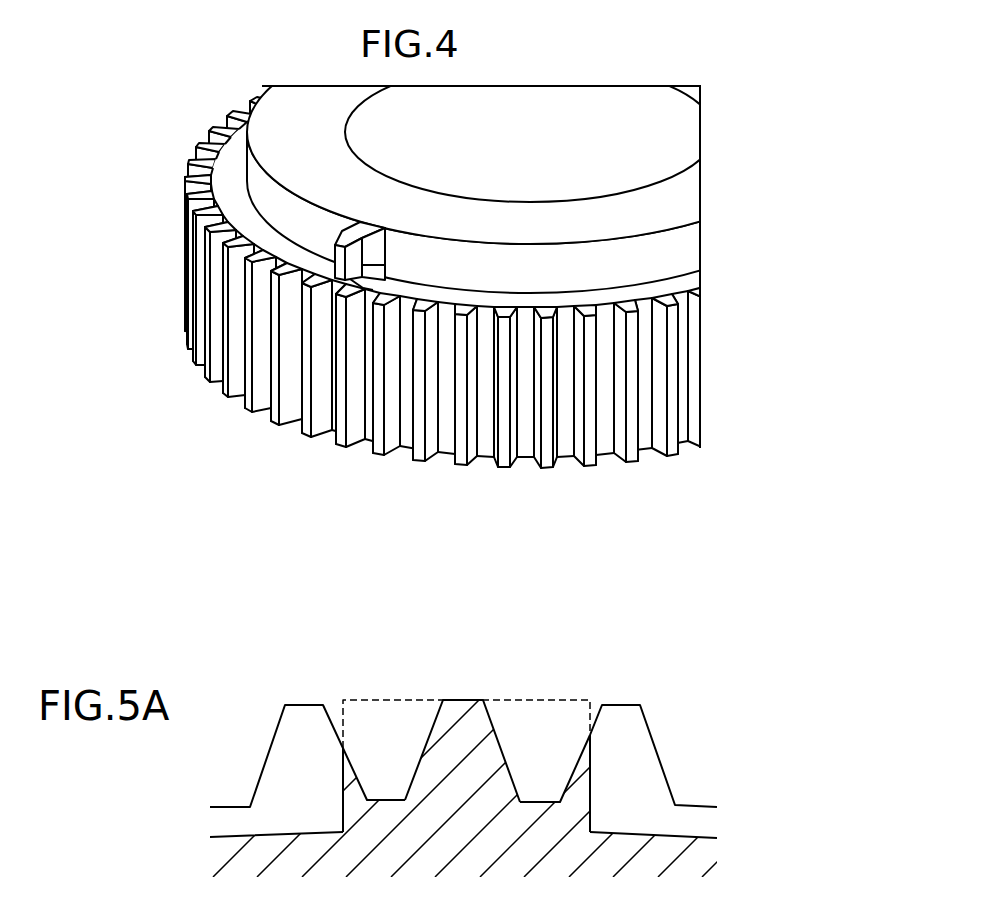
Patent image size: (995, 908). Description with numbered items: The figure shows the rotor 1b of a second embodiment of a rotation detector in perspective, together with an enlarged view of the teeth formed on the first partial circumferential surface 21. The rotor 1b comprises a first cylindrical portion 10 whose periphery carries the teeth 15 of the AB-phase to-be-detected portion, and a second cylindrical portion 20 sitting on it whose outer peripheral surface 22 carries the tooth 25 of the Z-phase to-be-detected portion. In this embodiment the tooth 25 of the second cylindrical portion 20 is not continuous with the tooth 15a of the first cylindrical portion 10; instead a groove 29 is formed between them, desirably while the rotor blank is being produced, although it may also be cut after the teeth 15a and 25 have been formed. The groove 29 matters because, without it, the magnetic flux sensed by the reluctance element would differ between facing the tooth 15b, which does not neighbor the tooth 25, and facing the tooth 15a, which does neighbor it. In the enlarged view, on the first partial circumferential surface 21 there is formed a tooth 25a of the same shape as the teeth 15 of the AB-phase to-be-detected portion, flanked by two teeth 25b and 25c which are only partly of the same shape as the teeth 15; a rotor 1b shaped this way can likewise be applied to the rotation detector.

In FIG. 4, the rotor 1b is at (498, 290).
In FIG. 4, the second cylindrical portion 20 is at (486, 156).
In FIG. 4, the outer peripheral surface of hub 22 is at (674, 249).
In FIG. 4, the tooth 25 is at (339, 256).
In FIG. 4, the groove 29 is at (364, 289).
In FIG. 4, the first cylindrical portion 10 is at (517, 307).
In FIG. 4, the teeth 15 is at (517, 298).
In FIG. 5A, the teeth 15 is at (652, 728).
In FIG. 4, the tooth 15a is at (336, 448).
In FIG. 4, the tooth 15b is at (502, 469).
In FIG. 5A, the tooth 25a is at (451, 705).
In FIG. 5A, the tooth 25b is at (350, 787).
In FIG. 5A, the tooth 25c is at (577, 787).
In FIG. 5A, the first partial circumferential surface 21 is at (538, 700).